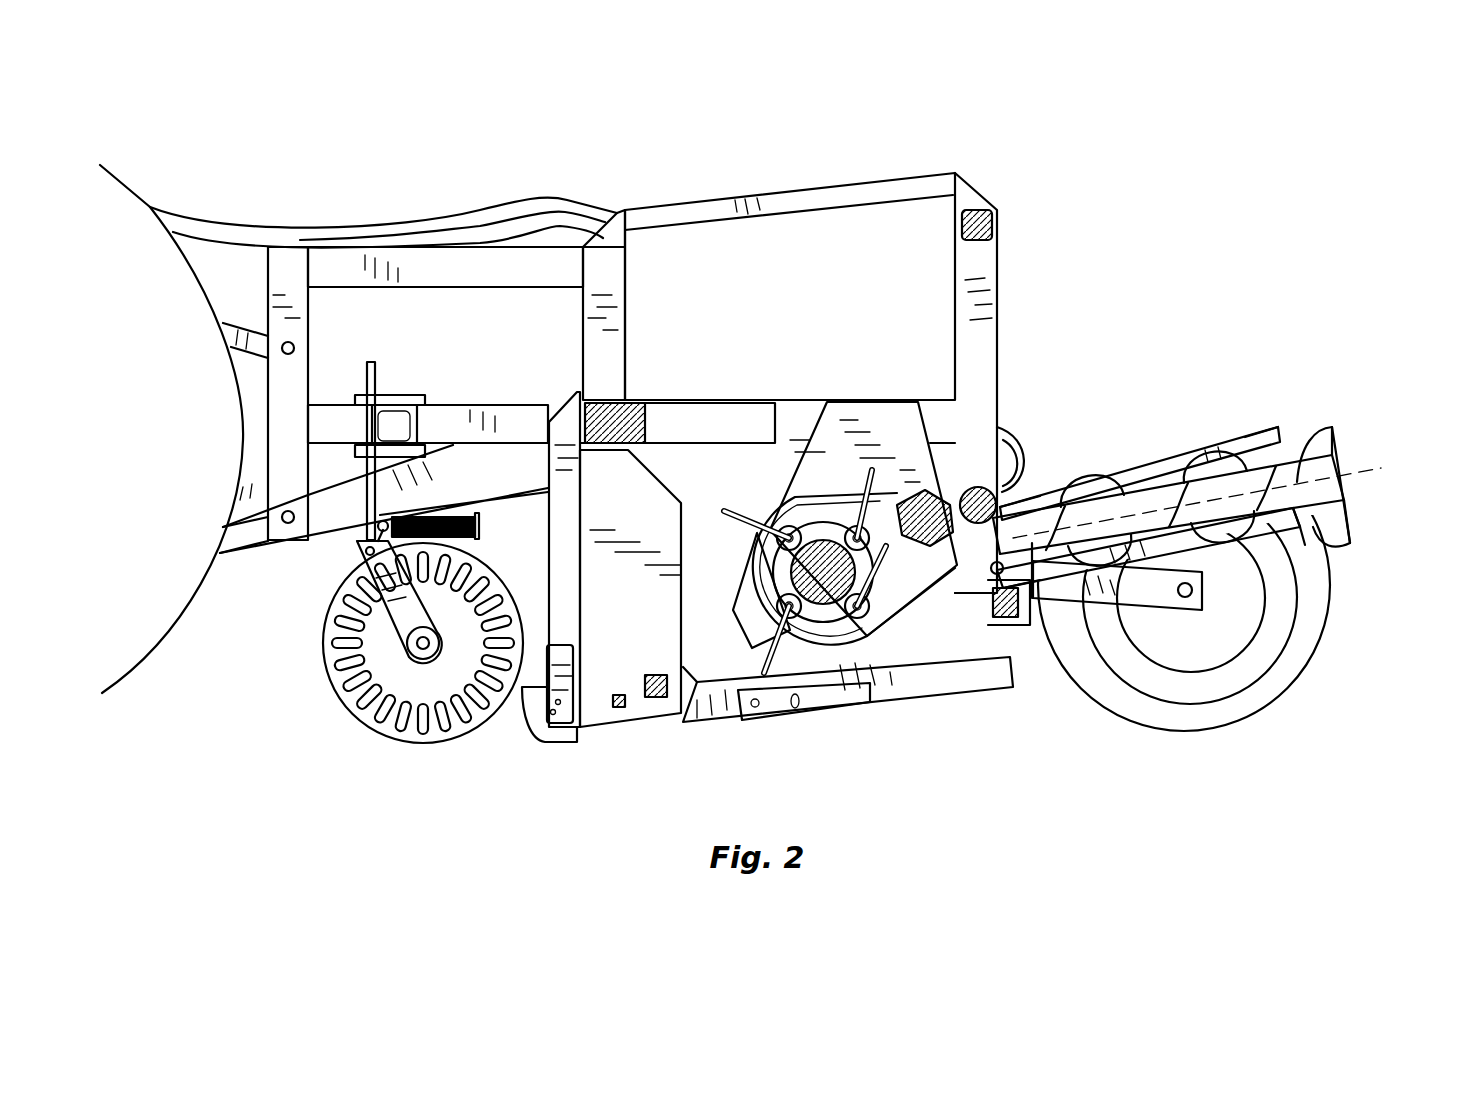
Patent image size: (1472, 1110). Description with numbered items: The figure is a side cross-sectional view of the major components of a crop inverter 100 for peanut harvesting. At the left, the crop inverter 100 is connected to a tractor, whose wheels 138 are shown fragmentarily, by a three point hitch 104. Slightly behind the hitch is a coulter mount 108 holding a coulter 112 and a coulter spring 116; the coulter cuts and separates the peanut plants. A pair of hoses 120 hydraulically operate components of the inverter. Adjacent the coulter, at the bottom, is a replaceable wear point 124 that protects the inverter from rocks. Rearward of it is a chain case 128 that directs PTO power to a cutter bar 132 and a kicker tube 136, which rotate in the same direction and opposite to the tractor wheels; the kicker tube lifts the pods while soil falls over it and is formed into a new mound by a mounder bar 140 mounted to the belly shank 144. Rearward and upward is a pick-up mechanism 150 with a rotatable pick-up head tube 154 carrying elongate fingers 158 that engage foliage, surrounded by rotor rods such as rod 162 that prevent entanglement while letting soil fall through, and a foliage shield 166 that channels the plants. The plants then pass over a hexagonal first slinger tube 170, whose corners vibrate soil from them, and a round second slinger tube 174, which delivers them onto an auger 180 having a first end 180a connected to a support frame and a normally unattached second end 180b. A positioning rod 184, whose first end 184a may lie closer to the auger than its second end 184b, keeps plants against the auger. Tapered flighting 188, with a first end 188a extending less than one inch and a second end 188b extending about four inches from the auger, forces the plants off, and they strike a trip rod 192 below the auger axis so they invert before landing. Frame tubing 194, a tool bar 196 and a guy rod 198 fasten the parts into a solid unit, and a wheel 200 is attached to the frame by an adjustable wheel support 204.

The crop inverter 100 is at (1022, 176).
The three point hitch 104 is at (297, 380).
The coulter mount 108 is at (505, 415).
The coulter 112 is at (367, 725).
The coulter spring 116 is at (453, 538).
The hoses 120 is at (488, 207).
The wear point 124 is at (533, 728).
The chain case 128 is at (592, 720).
The cutter bar 132 is at (620, 710).
The kicker tube 136 is at (655, 700).
The wheels 138 is at (170, 411).
The mounder bar 140 is at (912, 718).
The belly shank 144 is at (755, 725).
The pick-up mechanism 150 is at (880, 422).
The pick-up head tube 154 is at (800, 505).
The fingers 158 is at (735, 528).
The rotor rod 162 is at (760, 545).
The foliage shield 166 is at (815, 428).
The first slinger tube 170 is at (895, 510).
The second slinger tube 174 is at (985, 485).
The auger 180 is at (1335, 472).
The first end 180a is at (1065, 505).
The second end 180b is at (1340, 468).
The positioning rod 184 is at (1172, 462).
The first end 184a is at (1034, 495).
The second end 184b is at (1263, 432).
The flighting 188 is at (1272, 450).
The first end 188a is at (1035, 605).
The second end 188b is at (1350, 545).
The trip rod 192 is at (1306, 545).
The frame tubing 194 is at (993, 228).
The tool bar 196 is at (645, 420).
The guy rod 198 is at (678, 212).
The wheel 200 is at (1240, 700).
The adjustable wheel support 204 is at (1143, 598).